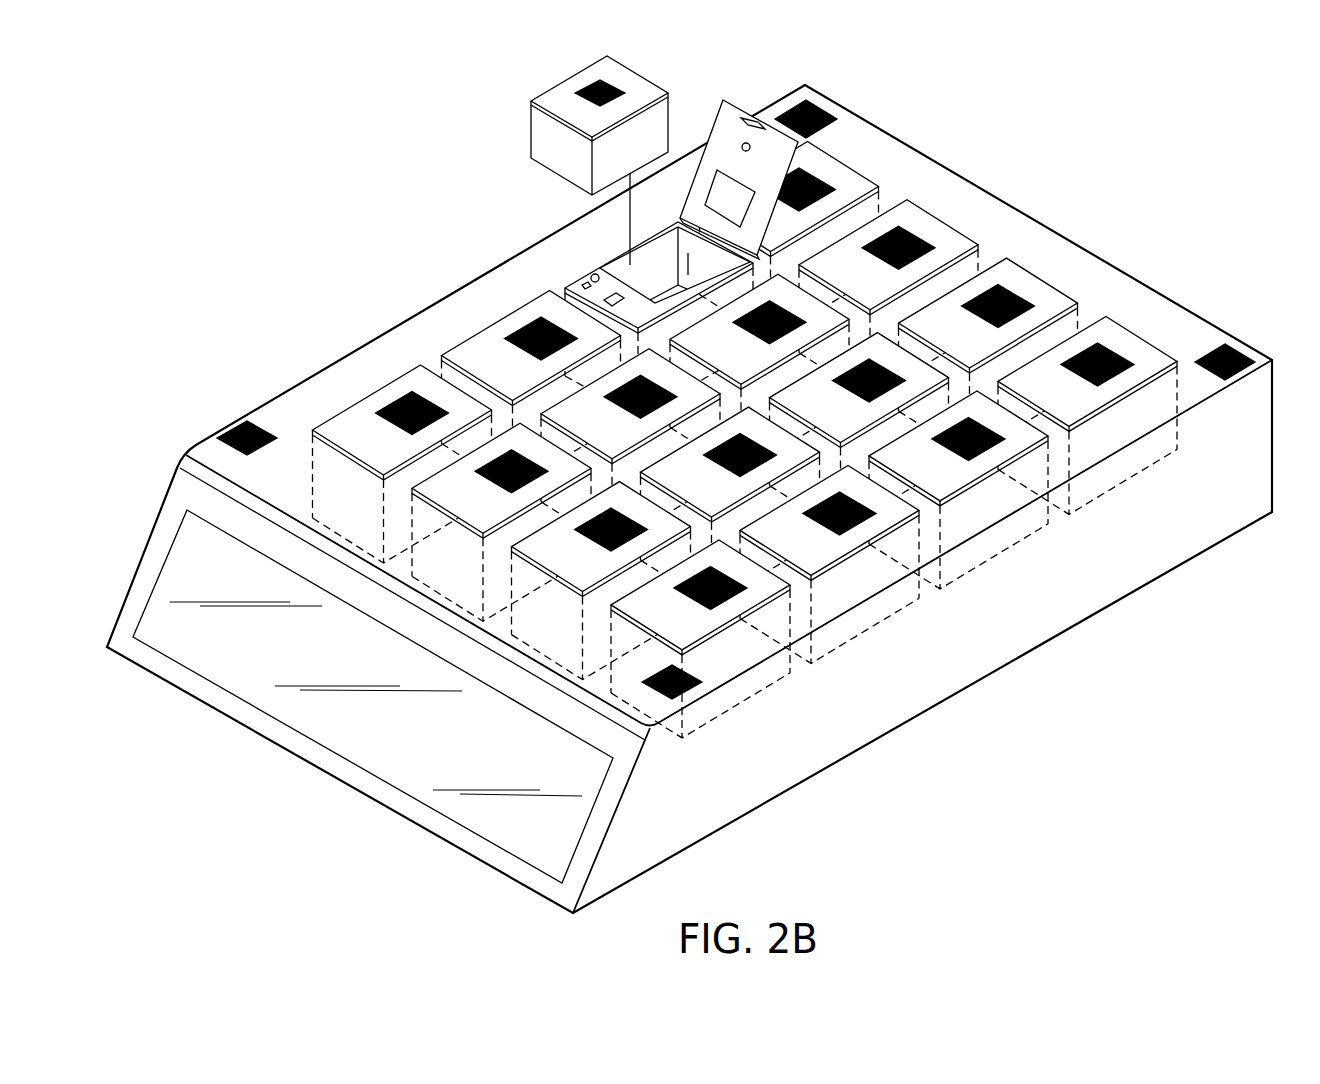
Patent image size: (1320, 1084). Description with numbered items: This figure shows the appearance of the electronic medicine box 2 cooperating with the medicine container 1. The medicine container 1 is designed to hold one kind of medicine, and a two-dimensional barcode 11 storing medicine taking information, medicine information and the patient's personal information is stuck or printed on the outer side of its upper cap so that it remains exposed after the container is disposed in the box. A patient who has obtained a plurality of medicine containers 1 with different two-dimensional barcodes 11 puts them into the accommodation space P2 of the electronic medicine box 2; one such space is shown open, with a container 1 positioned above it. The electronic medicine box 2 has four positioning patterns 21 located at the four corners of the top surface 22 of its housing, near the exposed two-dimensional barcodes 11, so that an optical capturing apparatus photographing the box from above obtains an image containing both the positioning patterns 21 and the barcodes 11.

The medicine container 1 is at (545, 138).
The two-dimensional barcode 11 is at (522, 330).
The electronic medicine box 2 is at (689, 493).
The positioning pattern 21 is at (238, 427).
The top surface 22 is at (1058, 250).
The accommodation space P2 is at (610, 255).